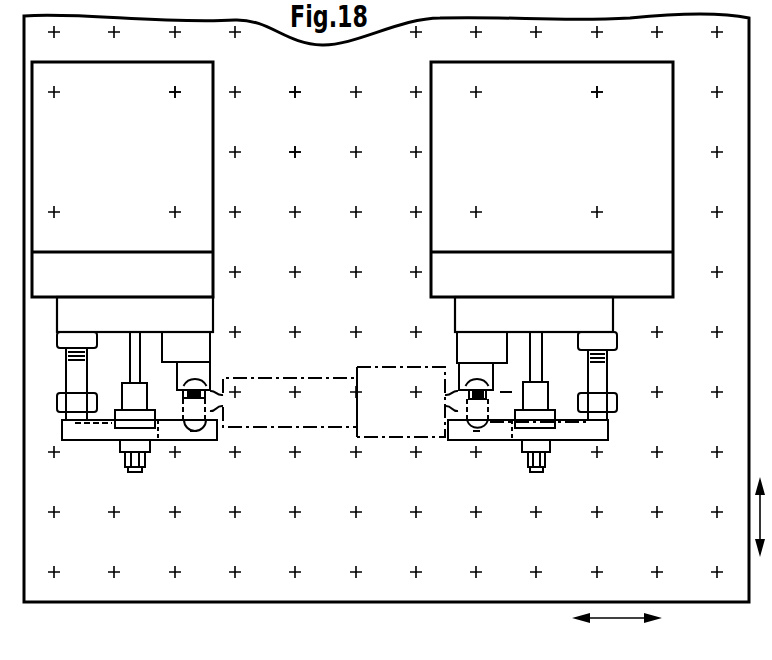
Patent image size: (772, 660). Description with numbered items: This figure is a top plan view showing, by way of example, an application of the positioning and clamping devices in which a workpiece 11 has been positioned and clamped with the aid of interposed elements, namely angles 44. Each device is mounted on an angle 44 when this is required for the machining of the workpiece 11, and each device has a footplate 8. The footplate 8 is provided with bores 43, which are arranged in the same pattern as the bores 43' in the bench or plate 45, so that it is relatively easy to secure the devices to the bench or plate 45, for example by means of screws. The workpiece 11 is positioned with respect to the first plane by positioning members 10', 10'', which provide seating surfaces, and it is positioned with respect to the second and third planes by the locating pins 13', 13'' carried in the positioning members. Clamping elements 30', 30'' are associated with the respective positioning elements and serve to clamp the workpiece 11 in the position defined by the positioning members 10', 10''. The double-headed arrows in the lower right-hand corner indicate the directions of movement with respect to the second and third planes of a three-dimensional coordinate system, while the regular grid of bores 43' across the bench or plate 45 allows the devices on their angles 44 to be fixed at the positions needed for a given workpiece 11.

The footplate 8 is at (202, 315).
The positioning member 10' is at (216, 371).
The positioning member 10'' is at (466, 369).
The workpiece 11 is at (378, 429).
The locating pin 13' is at (201, 440).
The locating pin 13'' is at (467, 443).
The clamping element 30' is at (137, 417).
The clamping element 30'' is at (532, 417).
The bores 43 is at (383, 115).
The bores 43' is at (317, 122).
The angle 44 is at (197, 170).
The bench or plate 45 is at (718, 251).